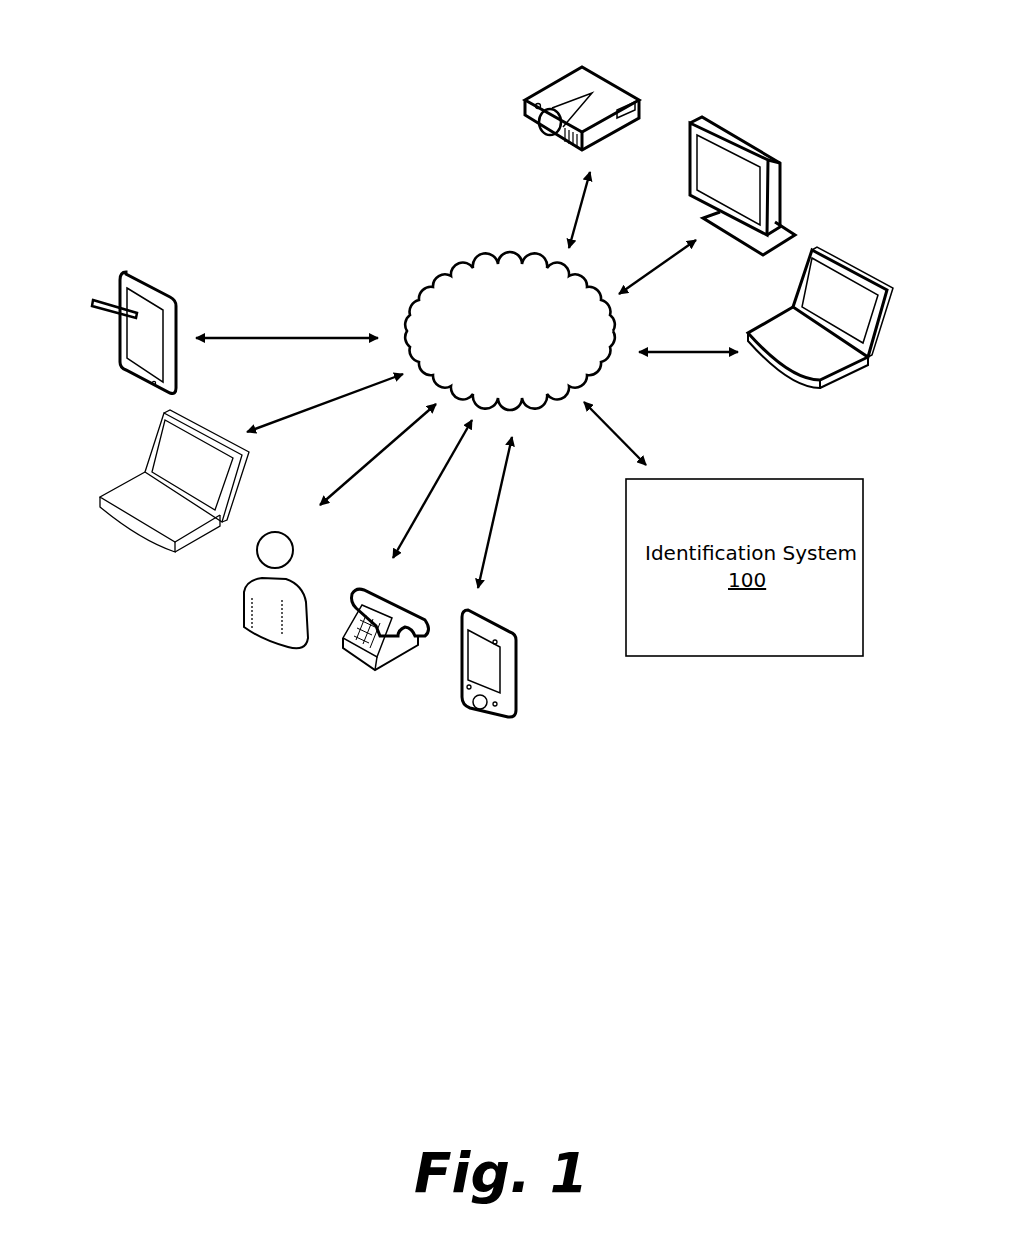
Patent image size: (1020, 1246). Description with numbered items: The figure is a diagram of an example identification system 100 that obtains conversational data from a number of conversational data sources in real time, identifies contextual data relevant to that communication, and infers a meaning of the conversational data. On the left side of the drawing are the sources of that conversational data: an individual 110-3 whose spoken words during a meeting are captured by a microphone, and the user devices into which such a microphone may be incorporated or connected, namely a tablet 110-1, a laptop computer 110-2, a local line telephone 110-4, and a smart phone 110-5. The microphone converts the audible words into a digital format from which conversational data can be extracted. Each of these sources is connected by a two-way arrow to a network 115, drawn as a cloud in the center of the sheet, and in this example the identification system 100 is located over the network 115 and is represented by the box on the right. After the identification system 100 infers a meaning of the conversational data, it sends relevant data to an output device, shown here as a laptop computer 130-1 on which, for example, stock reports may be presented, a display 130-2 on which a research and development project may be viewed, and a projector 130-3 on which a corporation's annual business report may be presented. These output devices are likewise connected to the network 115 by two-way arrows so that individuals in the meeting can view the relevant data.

The identification system 100 is at (212, 140).
The network 115 is at (477, 300).
The tablet 110-1 is at (130, 330).
The laptop computer 110-2 is at (192, 465).
The individual 110-3 is at (270, 600).
The local line telephone 110-4 is at (362, 660).
The smart phone 110-5 is at (482, 660).
The laptop computer 130-1 is at (830, 287).
The display 130-2 is at (742, 172).
The projector 130-3 is at (598, 88).